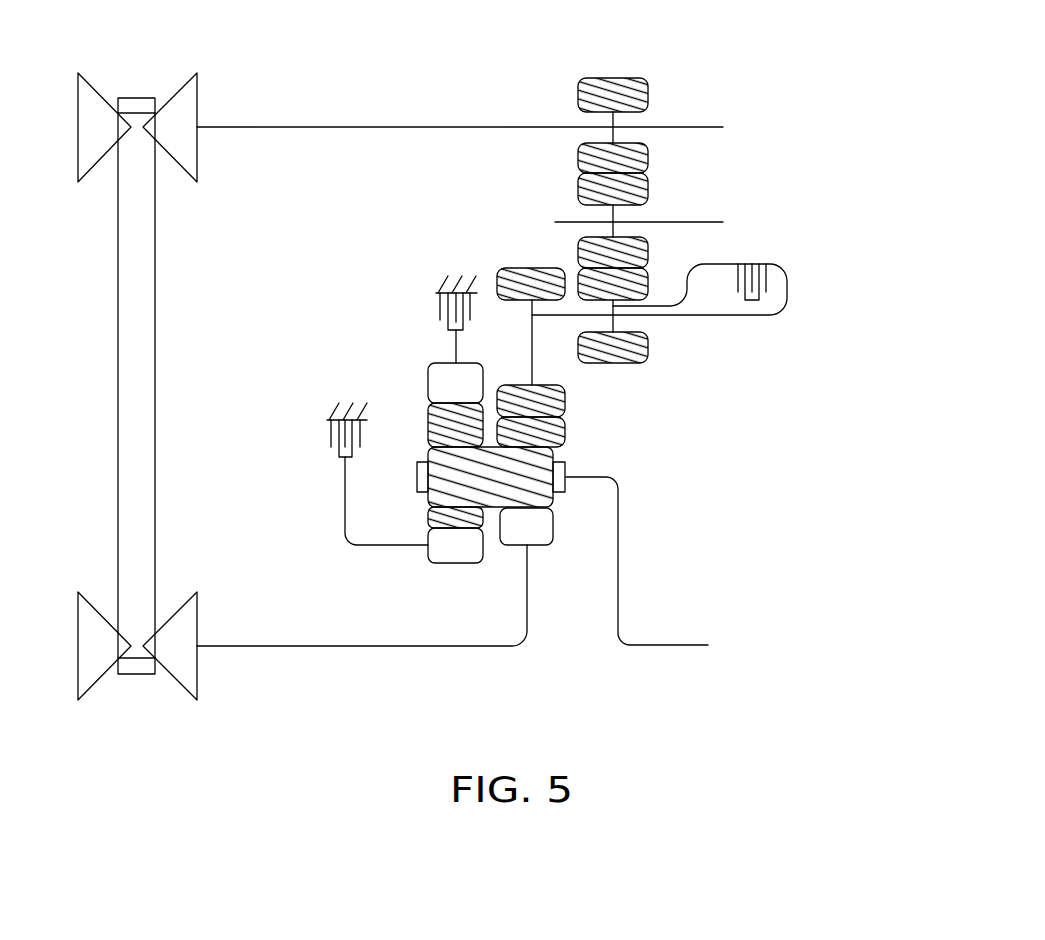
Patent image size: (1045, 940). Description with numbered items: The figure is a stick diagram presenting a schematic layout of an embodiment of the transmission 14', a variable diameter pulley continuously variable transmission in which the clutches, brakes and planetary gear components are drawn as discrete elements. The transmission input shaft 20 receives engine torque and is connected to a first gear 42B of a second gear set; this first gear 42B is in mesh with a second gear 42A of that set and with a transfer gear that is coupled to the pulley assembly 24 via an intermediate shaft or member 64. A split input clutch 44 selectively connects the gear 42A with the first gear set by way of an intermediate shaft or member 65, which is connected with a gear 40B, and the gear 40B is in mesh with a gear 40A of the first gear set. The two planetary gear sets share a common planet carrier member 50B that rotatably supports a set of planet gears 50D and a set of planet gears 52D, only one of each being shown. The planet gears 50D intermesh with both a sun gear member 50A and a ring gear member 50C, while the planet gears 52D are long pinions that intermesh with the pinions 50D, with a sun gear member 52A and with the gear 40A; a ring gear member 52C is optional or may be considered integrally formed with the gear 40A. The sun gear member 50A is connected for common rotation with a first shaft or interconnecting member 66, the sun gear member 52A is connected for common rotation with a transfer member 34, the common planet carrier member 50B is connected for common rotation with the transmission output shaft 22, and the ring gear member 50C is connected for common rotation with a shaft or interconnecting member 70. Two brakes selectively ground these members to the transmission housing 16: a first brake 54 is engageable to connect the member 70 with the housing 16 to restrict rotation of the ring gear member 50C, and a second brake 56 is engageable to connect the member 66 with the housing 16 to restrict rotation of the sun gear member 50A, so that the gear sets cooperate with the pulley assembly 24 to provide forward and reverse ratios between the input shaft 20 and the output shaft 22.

The transmission 14' is at (460, 388).
The pulley assembly 24 is at (148, 706).
The intermediate shaft or member 64 is at (308, 128).
The transfer member 34 is at (322, 647).
The transmission output shaft 22 is at (682, 647).
The first gear of the second gear set 42B is at (632, 185).
The transmission input shaft 20 is at (685, 223).
The second gear of the second gear set 42A is at (615, 352).
The gear of the first gear set 40B is at (522, 278).
The gear of the first gear set 40A is at (543, 432).
The intermediate shaft or member 65 is at (760, 316).
The split input clutch 44 is at (757, 264).
The transmission housing 16 is at (442, 292).
The first brake 54 is at (440, 305).
The shaft or interconnecting member 70 is at (455, 342).
The second brake 56 is at (330, 437).
The first shaft or interconnecting member 66 is at (345, 493).
The ring gear member 50C is at (447, 382).
The planet gears 50D is at (427, 425).
The common planet carrier member 50B is at (588, 492).
The ring gear member 52C is at (567, 490).
The planet gears 52D is at (437, 486).
The sun gear member 50A is at (455, 552).
The sun gear member 52A is at (553, 530).